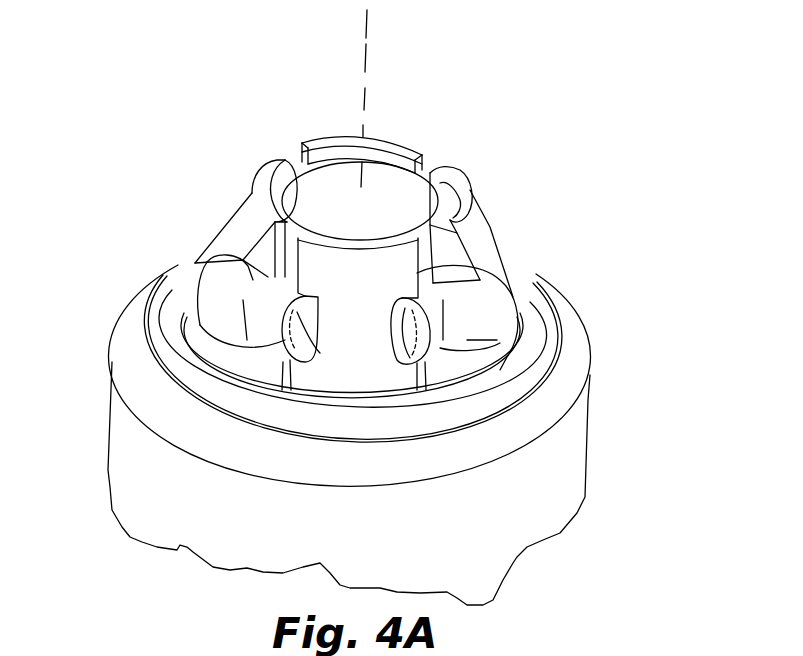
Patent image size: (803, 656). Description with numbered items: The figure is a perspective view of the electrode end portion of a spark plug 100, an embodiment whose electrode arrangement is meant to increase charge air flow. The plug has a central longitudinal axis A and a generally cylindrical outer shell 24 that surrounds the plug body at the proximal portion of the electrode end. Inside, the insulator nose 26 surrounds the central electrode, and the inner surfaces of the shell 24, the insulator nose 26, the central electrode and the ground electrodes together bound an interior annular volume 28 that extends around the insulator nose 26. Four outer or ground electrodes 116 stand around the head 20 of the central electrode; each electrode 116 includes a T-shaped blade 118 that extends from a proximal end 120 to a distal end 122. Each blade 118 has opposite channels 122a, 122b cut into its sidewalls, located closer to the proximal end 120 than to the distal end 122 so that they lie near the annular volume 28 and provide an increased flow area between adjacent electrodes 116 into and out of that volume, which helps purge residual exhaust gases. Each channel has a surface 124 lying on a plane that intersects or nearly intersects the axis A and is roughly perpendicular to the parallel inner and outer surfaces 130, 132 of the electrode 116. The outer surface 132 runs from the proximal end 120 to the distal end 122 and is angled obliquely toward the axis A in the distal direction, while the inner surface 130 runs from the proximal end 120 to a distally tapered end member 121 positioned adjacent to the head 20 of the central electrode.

The central longitudinal axis A is at (367, 48).
The head 20 is at (423, 162).
The outer shell 24 is at (143, 450).
The insulator nose 26 is at (172, 273).
The interior annular volume 28 is at (192, 378).
The spark plug 100 is at (603, 260).
The electrode 116 is at (243, 203).
The blade 118 is at (538, 287).
The proximal end 120 is at (420, 345).
The distally tapered end member 121 is at (437, 210).
The distal end 122 is at (340, 242).
The channel 122a is at (295, 340).
The channel 122b is at (373, 382).
The channel surface 124 is at (233, 285).
The inner surface 130 is at (472, 302).
The outer surface 132 is at (490, 228).